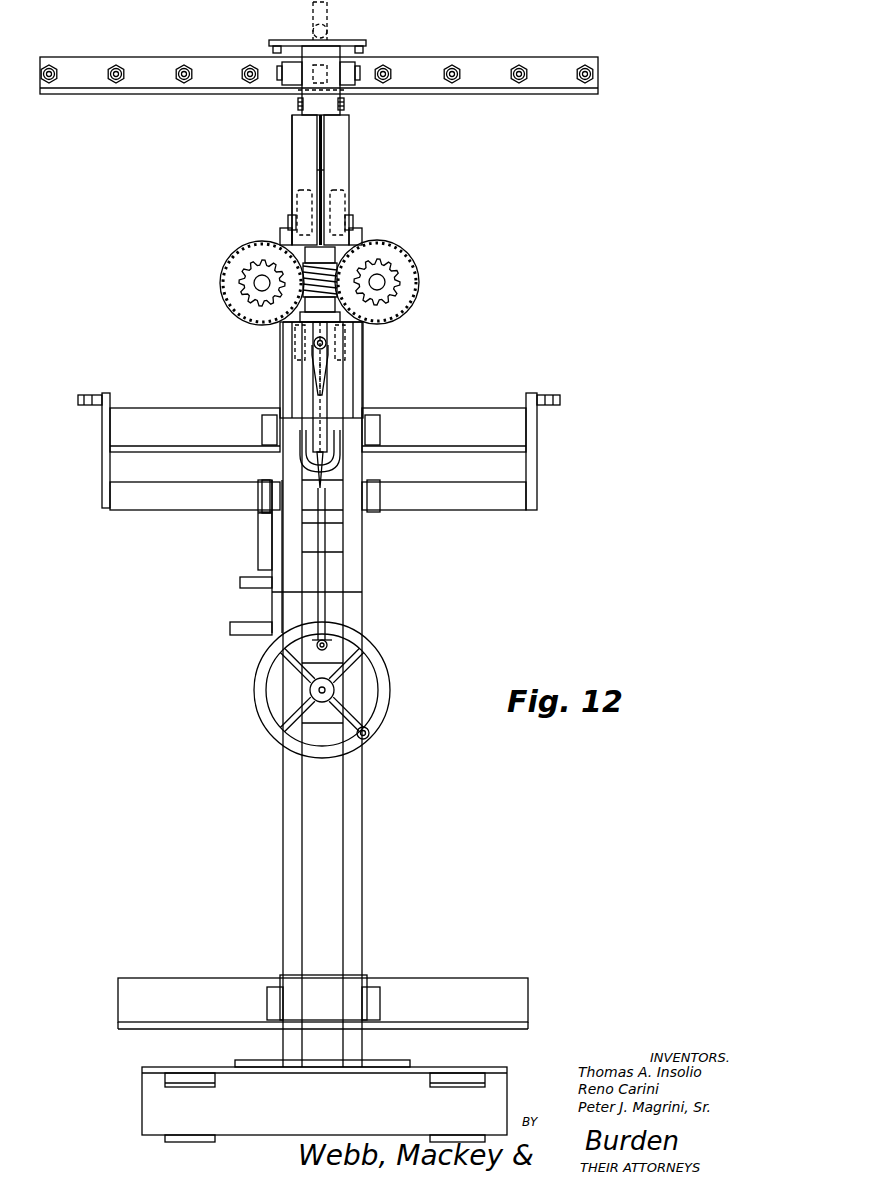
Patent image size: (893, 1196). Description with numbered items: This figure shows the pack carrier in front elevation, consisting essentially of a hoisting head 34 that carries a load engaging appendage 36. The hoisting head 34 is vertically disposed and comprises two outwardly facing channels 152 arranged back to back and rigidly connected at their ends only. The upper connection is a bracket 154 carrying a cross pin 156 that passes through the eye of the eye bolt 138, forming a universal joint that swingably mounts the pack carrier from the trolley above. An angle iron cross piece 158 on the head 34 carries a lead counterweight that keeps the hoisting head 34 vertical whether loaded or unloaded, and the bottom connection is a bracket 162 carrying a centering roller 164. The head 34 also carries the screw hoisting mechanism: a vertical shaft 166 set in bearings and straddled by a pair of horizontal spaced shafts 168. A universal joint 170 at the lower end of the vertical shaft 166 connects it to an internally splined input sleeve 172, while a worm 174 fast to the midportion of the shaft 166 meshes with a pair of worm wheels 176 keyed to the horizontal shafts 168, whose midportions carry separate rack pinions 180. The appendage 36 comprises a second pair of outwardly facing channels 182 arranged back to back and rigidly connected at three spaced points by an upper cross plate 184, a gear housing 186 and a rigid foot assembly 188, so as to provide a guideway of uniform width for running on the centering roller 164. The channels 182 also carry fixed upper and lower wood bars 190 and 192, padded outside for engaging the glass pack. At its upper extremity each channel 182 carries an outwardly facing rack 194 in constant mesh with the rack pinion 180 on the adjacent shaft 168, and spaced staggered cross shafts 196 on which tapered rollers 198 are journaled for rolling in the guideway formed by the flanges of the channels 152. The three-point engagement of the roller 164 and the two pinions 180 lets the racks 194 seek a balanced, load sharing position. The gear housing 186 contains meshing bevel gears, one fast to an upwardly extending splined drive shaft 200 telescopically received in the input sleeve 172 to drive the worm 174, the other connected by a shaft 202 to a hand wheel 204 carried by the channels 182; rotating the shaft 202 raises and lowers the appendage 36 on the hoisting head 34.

The hoisting head 34 is at (292, 146).
The load engaging appendage 36 is at (406, 829).
The eye bolt 138 is at (312, 19).
The outwardly facing channels 152 is at (295, 126).
The bracket 154 is at (340, 110).
The cross pin 156 is at (352, 72).
The angle iron cross piece 158 is at (178, 44).
The bracket 162 is at (340, 400).
The centering roller 164 is at (305, 467).
The vertical shaft 166 is at (303, 265).
The horizontal spaced shafts 168 is at (245, 275).
The universal joint 170 is at (335, 345).
The input sleeve 172 is at (333, 368).
The worm 174 is at (306, 288).
The worm wheels 176 is at (228, 312).
The rack pinions 180 is at (238, 283).
The outwardly facing channels 182 is at (290, 827).
The upper cross plate 184 is at (340, 540).
The gear housing 186 is at (326, 722).
The rigid foot assembly 188 is at (148, 1096).
The upper wood bar 190 is at (127, 432).
The lower wood bar 192 is at (470, 958).
The racks 194 is at (282, 236).
The cross shafts 196 is at (296, 217).
The tapered rollers 198 is at (300, 195).
The drive shaft 200 is at (330, 575).
The shaft 202 is at (332, 472).
The hand wheel 204 is at (370, 650).